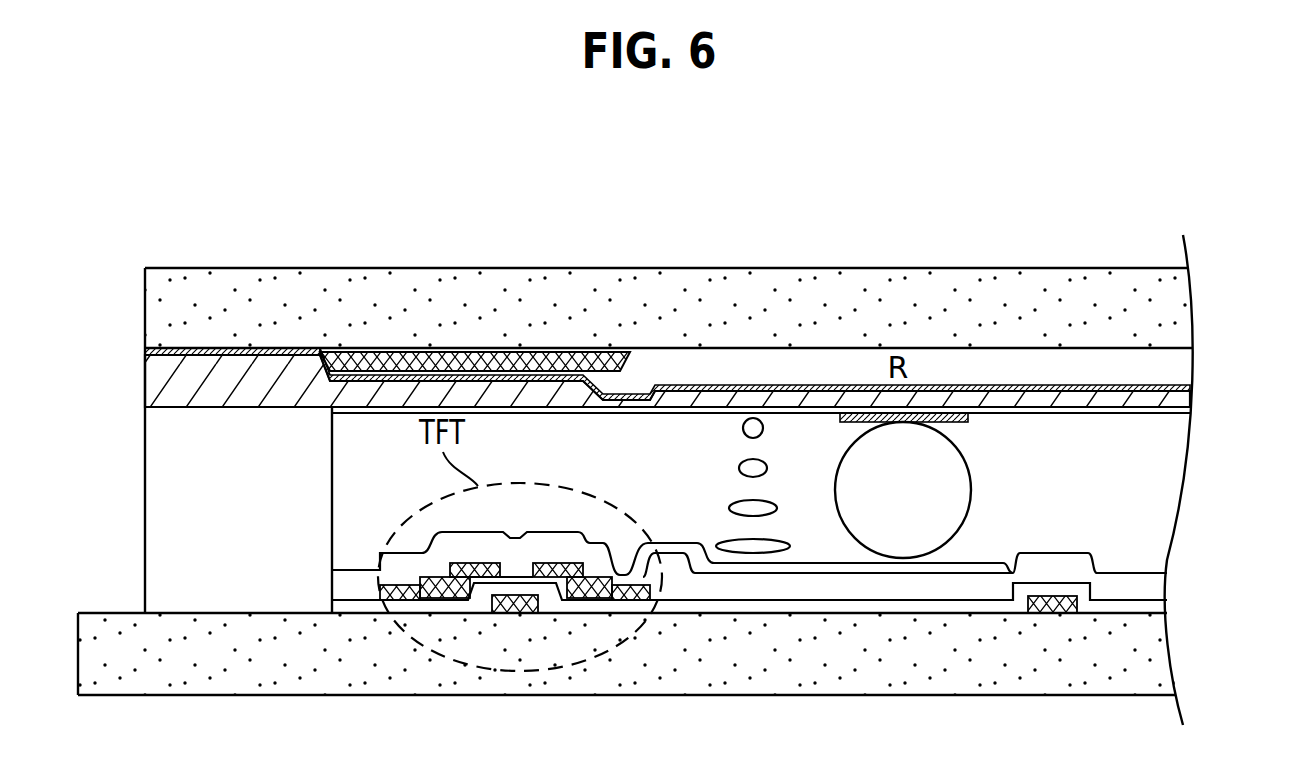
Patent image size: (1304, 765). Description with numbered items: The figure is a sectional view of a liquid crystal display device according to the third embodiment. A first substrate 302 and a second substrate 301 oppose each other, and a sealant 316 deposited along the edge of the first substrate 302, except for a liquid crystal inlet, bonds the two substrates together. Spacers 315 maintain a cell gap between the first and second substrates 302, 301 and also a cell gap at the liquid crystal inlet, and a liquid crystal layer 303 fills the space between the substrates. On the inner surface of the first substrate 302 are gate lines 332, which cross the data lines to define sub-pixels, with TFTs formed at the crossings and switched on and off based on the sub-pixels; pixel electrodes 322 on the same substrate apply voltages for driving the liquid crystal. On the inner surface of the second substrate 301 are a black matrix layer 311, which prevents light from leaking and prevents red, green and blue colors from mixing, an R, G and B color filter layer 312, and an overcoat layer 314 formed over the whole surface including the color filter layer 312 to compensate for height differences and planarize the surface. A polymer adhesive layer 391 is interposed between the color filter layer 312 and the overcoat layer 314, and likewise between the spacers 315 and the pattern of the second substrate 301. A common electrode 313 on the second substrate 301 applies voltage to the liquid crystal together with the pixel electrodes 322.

The second substrate 301 is at (1184, 307).
The first substrate 302 is at (670, 583).
The liquid crystal layer 303 is at (1218, 490).
The black matrix layer 311 is at (458, 352).
The color filter layer 312 is at (1184, 356).
The common electrode 313 is at (1108, 414).
The overcoat layer 314 is at (1184, 399).
The spacers 315 is at (962, 500).
The sealant 316 is at (158, 468).
The pixel electrodes 322 is at (670, 545).
The gate lines 332 is at (1050, 614).
The polymer adhesive layer 391 is at (254, 348).